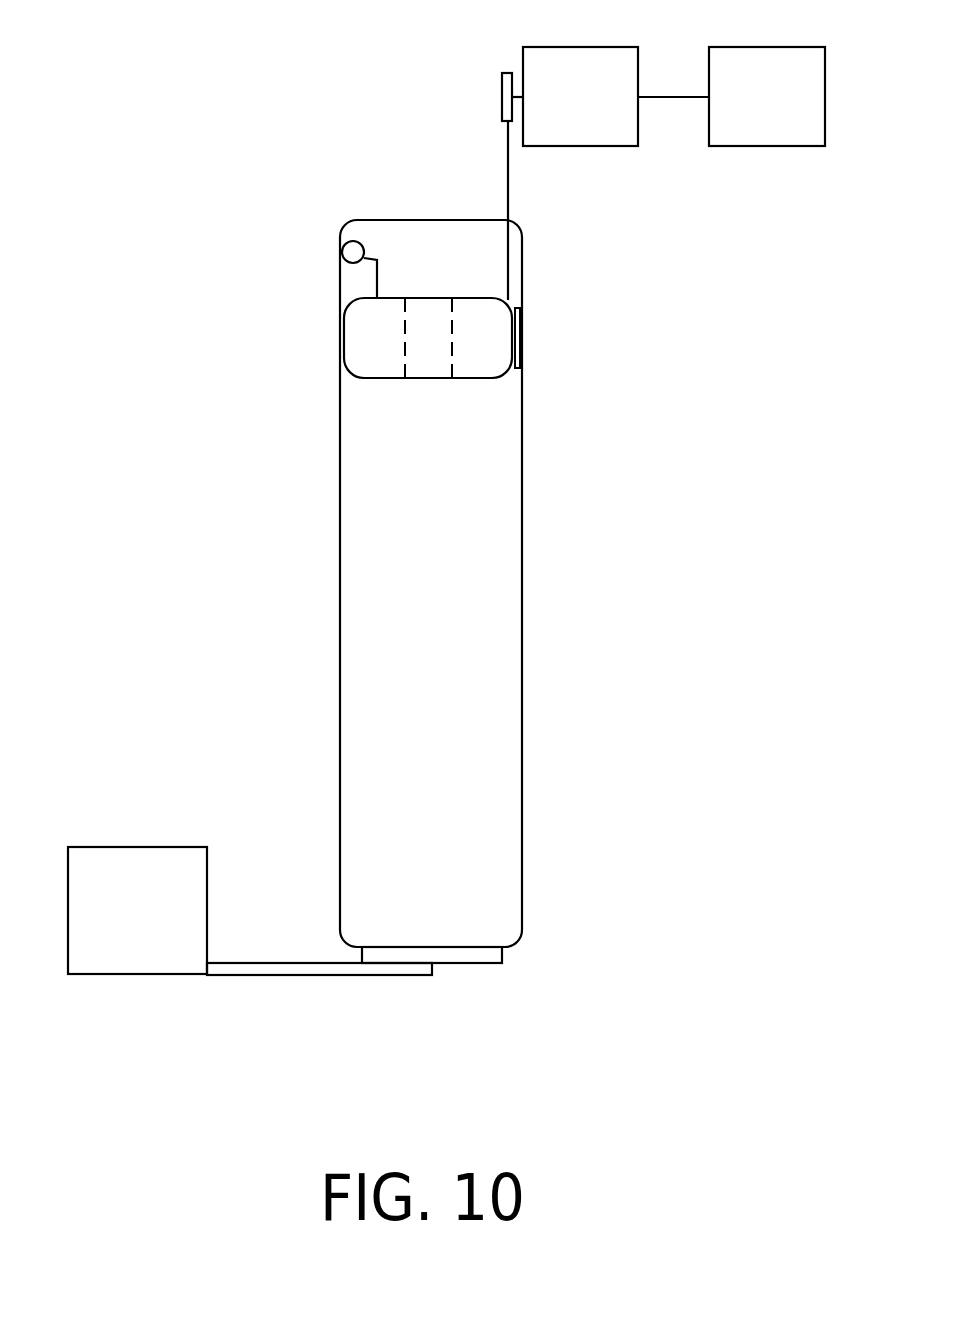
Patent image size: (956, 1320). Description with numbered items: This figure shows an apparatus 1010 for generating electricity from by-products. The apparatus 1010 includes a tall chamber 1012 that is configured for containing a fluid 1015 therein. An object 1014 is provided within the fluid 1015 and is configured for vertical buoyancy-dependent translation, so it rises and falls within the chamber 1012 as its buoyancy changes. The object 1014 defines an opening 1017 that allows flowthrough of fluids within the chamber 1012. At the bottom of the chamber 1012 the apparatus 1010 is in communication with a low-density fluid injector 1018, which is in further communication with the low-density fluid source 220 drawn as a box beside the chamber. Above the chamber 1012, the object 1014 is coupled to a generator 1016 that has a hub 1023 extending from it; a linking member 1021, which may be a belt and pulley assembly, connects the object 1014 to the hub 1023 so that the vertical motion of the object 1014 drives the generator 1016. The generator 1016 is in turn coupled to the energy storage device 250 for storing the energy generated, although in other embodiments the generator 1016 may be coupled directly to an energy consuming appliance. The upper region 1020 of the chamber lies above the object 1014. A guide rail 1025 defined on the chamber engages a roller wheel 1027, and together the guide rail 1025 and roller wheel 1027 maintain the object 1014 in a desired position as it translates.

The apparatus 1010 is at (446, 534).
The chamber 1012 is at (522, 660).
The object 1014 is at (515, 340).
The fluid 1015 is at (488, 758).
The generator 1016 is at (580, 96).
The opening 1017 is at (440, 345).
The low-density fluid injector 1018 is at (478, 952).
The upper chamber 1020 is at (490, 238).
The linking member 1021 is at (508, 278).
The hub 1023 is at (500, 97).
The guide rail 1025 is at (343, 241).
The roller wheel 1027 is at (367, 268).
The low-density fluid source 220 is at (172, 931).
The energy storage device 250 is at (800, 118).